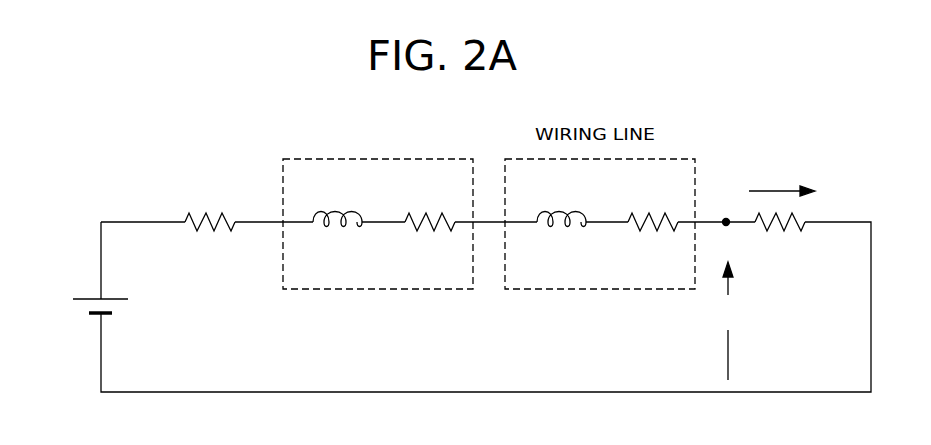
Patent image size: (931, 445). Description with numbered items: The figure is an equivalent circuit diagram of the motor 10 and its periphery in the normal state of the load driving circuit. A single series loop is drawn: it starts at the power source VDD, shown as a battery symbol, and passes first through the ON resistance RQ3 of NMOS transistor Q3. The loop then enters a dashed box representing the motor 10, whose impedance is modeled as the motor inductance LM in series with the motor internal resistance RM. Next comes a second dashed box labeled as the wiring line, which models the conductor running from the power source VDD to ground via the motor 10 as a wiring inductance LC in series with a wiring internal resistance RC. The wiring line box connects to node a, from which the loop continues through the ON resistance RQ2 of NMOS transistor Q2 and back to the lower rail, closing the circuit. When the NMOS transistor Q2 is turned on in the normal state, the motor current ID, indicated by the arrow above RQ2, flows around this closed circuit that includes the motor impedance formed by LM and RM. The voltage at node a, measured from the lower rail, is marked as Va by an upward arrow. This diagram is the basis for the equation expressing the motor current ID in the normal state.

The motor 10 is at (378, 205).
The power source VDD is at (75, 307).
The ON resistance of NMOS transistor Q3 RQ3 is at (210, 238).
The inductance of the motor LM is at (337, 238).
The internal resistance of the motor RM is at (430, 238).
The inductance of the wiring line LC is at (561, 238).
The internal resistance of the wiring line RC is at (653, 238).
The node a is at (727, 238).
The ON resistance of NMOS transistor Q2 RQ2 is at (780, 238).
The motor current ID is at (782, 180).
The node voltage Va is at (725, 321).